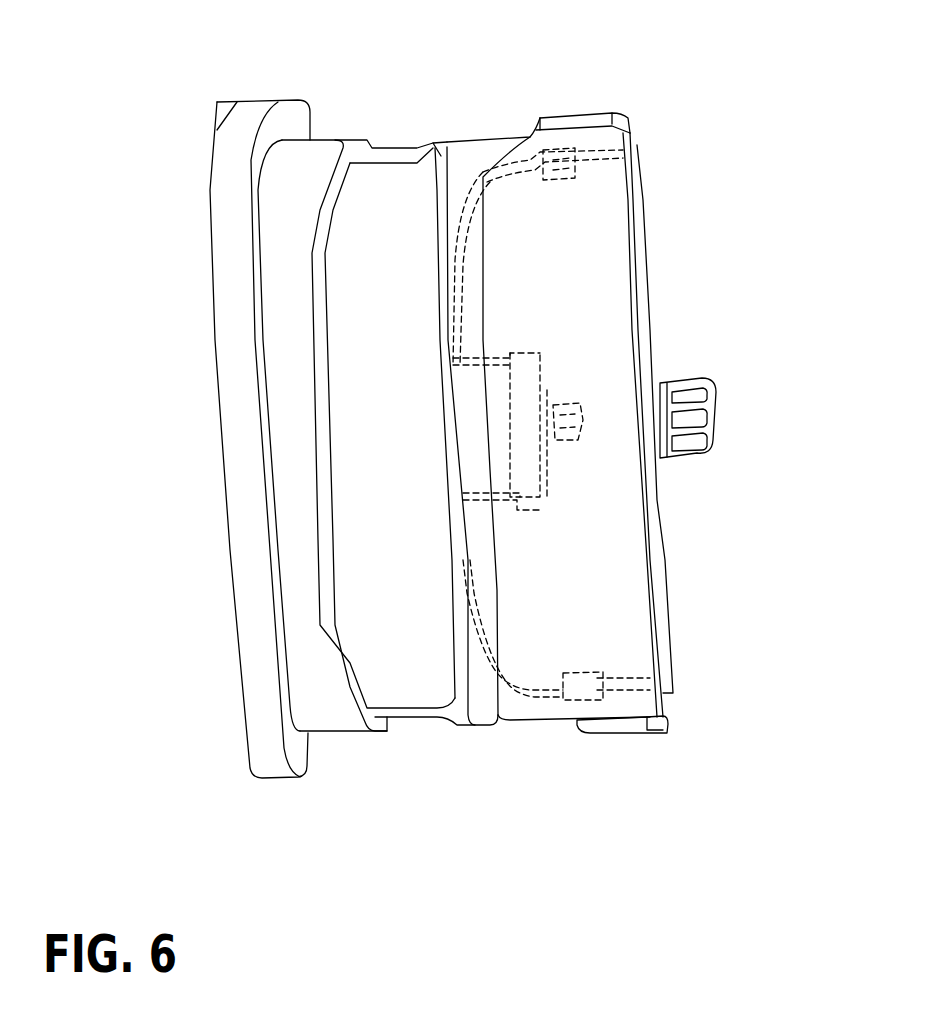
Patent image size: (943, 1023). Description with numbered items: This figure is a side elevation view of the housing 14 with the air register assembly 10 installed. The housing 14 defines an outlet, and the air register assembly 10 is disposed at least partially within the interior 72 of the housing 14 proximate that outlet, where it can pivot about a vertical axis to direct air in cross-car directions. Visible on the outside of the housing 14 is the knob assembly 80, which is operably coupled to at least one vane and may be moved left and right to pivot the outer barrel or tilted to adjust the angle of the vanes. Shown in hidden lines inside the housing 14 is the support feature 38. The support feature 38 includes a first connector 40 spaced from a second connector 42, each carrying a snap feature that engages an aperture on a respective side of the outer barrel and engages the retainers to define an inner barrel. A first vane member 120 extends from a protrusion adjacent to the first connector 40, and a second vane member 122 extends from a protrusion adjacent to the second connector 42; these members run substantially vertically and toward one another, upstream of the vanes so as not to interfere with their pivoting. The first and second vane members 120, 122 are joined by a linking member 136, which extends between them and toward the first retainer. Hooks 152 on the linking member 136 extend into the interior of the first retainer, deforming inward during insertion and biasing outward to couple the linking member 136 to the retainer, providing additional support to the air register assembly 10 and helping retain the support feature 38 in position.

The air register assembly 10 is at (668, 178).
The housing 14 is at (403, 153).
The support feature 38 is at (537, 643).
The first connector 40 is at (585, 135).
The second connector 42 is at (612, 700).
The interior 72 is at (350, 428).
The knob assembly 80 is at (713, 408).
The first vane member 120 is at (507, 250).
The second vane member 122 is at (520, 563).
The linking member 136 is at (530, 382).
The hooks 152 is at (583, 420).